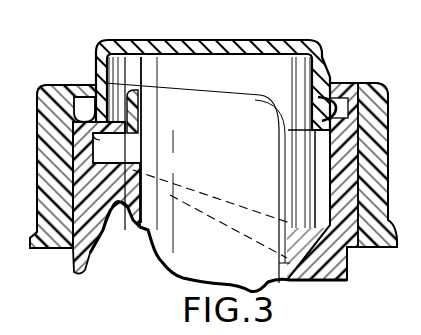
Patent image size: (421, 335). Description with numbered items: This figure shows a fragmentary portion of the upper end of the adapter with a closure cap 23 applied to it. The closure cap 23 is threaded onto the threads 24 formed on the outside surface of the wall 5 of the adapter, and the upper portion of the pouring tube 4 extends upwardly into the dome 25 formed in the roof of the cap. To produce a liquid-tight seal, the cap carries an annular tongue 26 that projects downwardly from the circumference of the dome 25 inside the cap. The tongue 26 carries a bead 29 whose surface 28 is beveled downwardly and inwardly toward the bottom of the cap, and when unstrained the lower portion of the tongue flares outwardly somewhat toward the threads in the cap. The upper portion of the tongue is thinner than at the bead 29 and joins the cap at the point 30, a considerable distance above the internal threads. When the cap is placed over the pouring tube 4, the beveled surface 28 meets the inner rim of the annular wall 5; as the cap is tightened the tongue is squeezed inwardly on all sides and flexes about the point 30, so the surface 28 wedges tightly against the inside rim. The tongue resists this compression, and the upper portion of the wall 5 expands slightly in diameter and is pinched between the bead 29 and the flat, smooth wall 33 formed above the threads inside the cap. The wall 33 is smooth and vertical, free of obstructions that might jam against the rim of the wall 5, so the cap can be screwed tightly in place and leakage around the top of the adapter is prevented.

The pouring tube 4 is at (228, 100).
The wall 5 is at (335, 182).
The closure cap 23 is at (325, 58).
The threads 24 is at (72, 142).
The dome 25 is at (158, 57).
The annular tongue 26 is at (138, 118).
The surface 28 is at (125, 144).
The bead 29 is at (100, 98).
The point 30 is at (108, 106).
The wall 33 is at (72, 113).